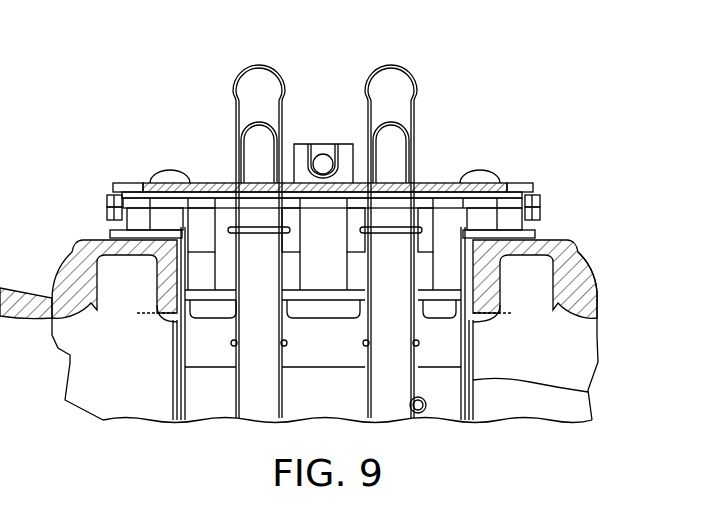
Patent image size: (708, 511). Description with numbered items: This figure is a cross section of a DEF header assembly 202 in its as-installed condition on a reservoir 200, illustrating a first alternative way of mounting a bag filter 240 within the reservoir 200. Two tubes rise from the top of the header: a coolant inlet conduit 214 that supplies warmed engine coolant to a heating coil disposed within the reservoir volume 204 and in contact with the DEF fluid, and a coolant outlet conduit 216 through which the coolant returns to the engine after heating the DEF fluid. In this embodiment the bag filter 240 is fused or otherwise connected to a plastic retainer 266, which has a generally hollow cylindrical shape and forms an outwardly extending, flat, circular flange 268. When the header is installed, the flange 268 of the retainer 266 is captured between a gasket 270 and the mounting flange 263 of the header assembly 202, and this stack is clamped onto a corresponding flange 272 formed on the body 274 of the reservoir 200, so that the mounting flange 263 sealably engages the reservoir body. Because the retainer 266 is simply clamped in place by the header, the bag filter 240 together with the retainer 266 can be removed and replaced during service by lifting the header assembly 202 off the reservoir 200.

The reservoir 200 is at (188, 110).
The header assembly 202 is at (497, 110).
The reservoir volume 204 is at (562, 357).
The coolant inlet conduit 214 is at (402, 68).
The coolant outlet conduit 216 is at (248, 68).
The bag filter 240 is at (588, 392).
The mounting flange 263 is at (514, 184).
The retainer 266 is at (213, 340).
The flange 268 is at (110, 232).
The gasket 270 is at (80, 250).
The flange 272 is at (548, 240).
The body 274 is at (572, 280).